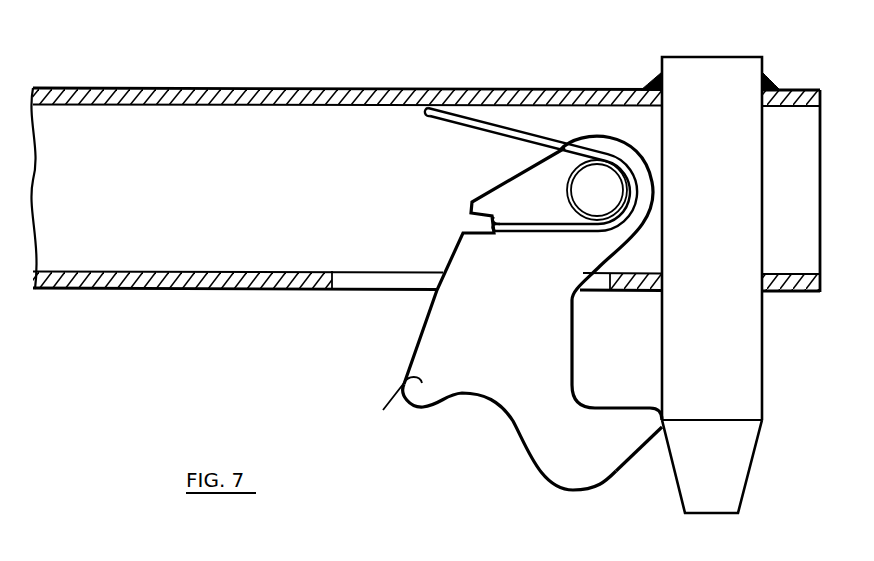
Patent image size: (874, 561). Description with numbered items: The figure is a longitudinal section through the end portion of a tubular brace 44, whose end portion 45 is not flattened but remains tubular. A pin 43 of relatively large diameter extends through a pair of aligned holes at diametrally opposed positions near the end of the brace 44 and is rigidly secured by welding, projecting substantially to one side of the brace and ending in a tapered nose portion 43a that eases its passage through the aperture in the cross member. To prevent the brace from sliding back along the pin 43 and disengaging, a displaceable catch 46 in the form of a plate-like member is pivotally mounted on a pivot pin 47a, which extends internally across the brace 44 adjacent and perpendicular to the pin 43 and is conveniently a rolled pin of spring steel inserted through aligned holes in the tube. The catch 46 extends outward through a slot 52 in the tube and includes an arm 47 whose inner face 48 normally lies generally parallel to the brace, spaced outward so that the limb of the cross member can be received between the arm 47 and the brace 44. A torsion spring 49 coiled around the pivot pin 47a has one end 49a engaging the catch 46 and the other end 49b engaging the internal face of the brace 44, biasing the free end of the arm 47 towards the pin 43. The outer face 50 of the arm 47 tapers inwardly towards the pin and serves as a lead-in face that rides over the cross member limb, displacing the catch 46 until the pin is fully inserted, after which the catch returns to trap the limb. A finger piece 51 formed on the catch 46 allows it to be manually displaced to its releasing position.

The pin 43 is at (770, 336).
The tapered nose portion 43a is at (756, 456).
The brace 44 is at (164, 83).
The end portion 45 is at (589, 90).
The catch 46 is at (508, 341).
The arm 47 is at (582, 468).
The pivot pin 47a is at (578, 180).
The inner face 48 is at (589, 406).
The torsion spring 49 is at (531, 164).
The end of spring 49a is at (497, 229).
The end of spring 49b is at (436, 108).
The outer face 50 is at (641, 457).
The finger piece 51 is at (388, 396).
The slot 52 is at (340, 285).